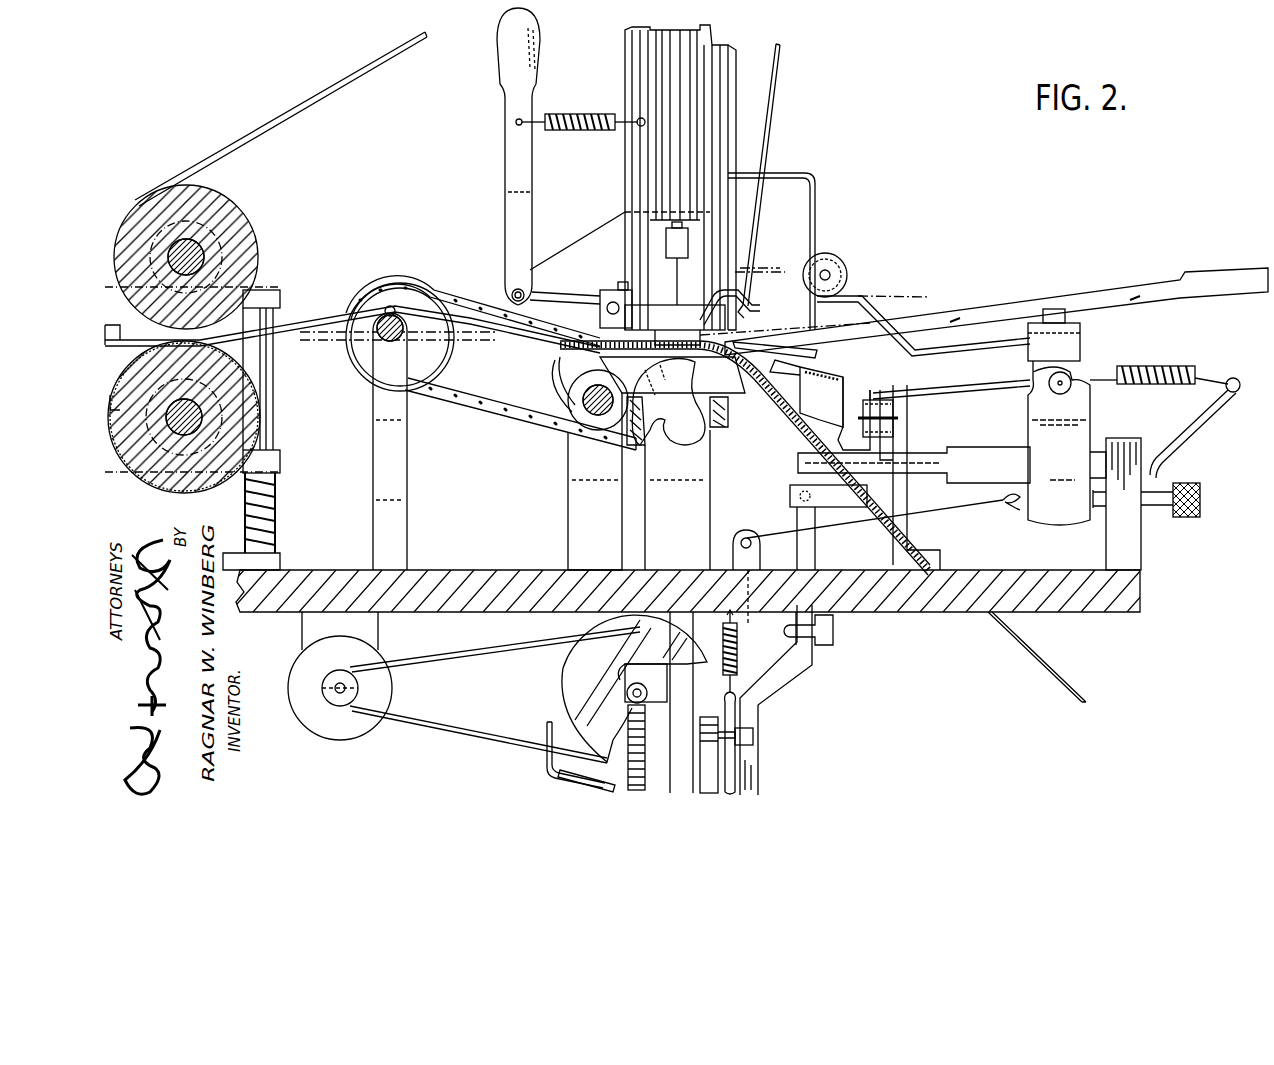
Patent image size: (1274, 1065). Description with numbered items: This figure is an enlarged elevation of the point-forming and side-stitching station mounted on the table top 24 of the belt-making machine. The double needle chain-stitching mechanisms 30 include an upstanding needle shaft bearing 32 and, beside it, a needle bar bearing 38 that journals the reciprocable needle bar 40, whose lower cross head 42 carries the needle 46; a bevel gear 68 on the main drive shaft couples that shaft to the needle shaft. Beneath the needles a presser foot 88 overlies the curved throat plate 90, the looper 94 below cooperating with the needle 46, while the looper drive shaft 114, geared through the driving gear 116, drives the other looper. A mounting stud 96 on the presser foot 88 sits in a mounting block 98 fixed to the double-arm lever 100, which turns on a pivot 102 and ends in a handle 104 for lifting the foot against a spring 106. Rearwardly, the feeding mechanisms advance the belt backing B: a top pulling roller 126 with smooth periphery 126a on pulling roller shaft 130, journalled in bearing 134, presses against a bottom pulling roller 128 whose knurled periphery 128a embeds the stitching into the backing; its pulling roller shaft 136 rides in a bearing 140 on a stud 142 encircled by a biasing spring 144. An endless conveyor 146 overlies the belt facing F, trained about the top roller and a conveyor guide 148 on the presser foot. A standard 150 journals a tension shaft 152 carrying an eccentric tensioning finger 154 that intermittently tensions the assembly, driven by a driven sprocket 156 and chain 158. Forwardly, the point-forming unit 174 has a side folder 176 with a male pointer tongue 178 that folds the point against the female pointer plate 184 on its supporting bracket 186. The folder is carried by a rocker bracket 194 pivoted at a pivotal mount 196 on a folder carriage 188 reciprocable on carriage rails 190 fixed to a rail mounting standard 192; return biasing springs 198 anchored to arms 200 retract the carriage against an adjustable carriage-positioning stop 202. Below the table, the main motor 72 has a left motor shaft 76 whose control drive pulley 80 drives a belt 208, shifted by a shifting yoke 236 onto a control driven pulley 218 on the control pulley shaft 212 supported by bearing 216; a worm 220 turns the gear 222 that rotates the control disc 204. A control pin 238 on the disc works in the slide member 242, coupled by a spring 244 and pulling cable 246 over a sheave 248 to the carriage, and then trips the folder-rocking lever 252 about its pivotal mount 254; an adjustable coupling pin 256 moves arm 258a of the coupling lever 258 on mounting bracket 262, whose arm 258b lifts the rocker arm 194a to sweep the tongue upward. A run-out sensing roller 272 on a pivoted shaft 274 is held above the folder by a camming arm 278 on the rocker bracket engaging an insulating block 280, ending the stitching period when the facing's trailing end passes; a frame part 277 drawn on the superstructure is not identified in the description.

The table top 24 is at (1100, 612).
The double needle chain-stitching mechanisms 30 is at (783, 202).
The needle shaft bearing 32 is at (728, 82).
The needle bar bearing 38 is at (690, 38).
The needle bar 40 is at (650, 228).
The cross head 42 is at (666, 240).
The needle 46 is at (677, 278).
The bevel gear 68 is at (722, 430).
The main motor 72 is at (350, 740).
The left motor shaft 76 is at (340, 684).
The control drive pulley 80 is at (334, 702).
The presser foot 88 is at (675, 318).
The throat plate 90 is at (600, 350).
The looper 94 is at (682, 430).
The mounting stud 96 is at (628, 282).
The mounting block 98 is at (603, 298).
The double-arm lever 100 is at (505, 146).
The pivot 102 is at (527, 288).
The handle 104 is at (510, 52).
The spring 106 is at (580, 116).
The looper drive shaft 114 is at (590, 410).
The driving gear 116 is at (568, 385).
The top pulling roller 126 is at (225, 200).
The periphery of top pulling roller 126a is at (243, 208).
The bottom pulling roller 128 is at (160, 488).
The periphery of bottom pulling roller 128a is at (205, 427).
The pulling roller shaft 130 is at (192, 252).
The bearing 134 is at (278, 288).
The pulling roller shaft 136 is at (210, 418).
The bearing 140 is at (282, 462).
The stud 142 is at (278, 516).
The biasing spring 144 is at (278, 542).
The endless conveyor 146 is at (316, 102).
The conveyor guide 148 is at (745, 303).
The standard 150 is at (404, 512).
The tension shaft 152 is at (385, 332).
The tensioning finger 154 is at (392, 292).
The driven sprocket 156 is at (428, 357).
The chain 158 is at (442, 405).
The point-forming and side-folding unit 174 is at (988, 272).
The side folder 176 is at (940, 318).
The male pointer tongue 178 is at (785, 345).
The female pointer plate 184 is at (806, 393).
The supporting bracket 186 is at (838, 380).
The folder carriage 188 is at (1088, 415).
The carriage rails 190 is at (798, 457).
The rail mounting standard 192 is at (1140, 552).
The rocker bracket 194 is at (1080, 338).
The rocker arm 194a is at (930, 388).
The pivotal mount 196 is at (1068, 376).
The return biasing springs 198 is at (1180, 366).
The arms 200 is at (1195, 428).
The carriage-positioning stop 202 is at (1190, 516).
The control disc 204 is at (708, 717).
The belt 208 is at (452, 670).
The control pulley shaft 212 is at (628, 700).
The bearing 216 is at (655, 668).
The control driven pulley 218 is at (562, 665).
The worm 220 is at (575, 663).
The gear 222 is at (625, 762).
The shifting yoke 236 is at (545, 770).
The control pin 238 is at (756, 736).
The folder carriage shift slide member 242 is at (740, 777).
The spring 244 is at (740, 650).
The pulling cable 246 is at (760, 538).
The sheave 248 is at (735, 553).
The folder-rocking lever 252 is at (770, 690).
The pivotal mount 254 is at (838, 634).
The adjustable coupling pin 256 is at (800, 490).
The coupling lever 258 is at (782, 499).
The arm of coupling lever 258a is at (832, 507).
The arm of coupling lever 258b is at (898, 412).
The mounting bracket 262 is at (910, 500).
The run-out sensing roller 272 is at (840, 262).
The pivoted shaft 274 is at (826, 270).
The frame 277 is at (817, 198).
The camming arm 278 is at (760, 268).
The insulating block 280 is at (842, 262).
The belt facing F is at (298, 320).
The belt backing B is at (1035, 660).